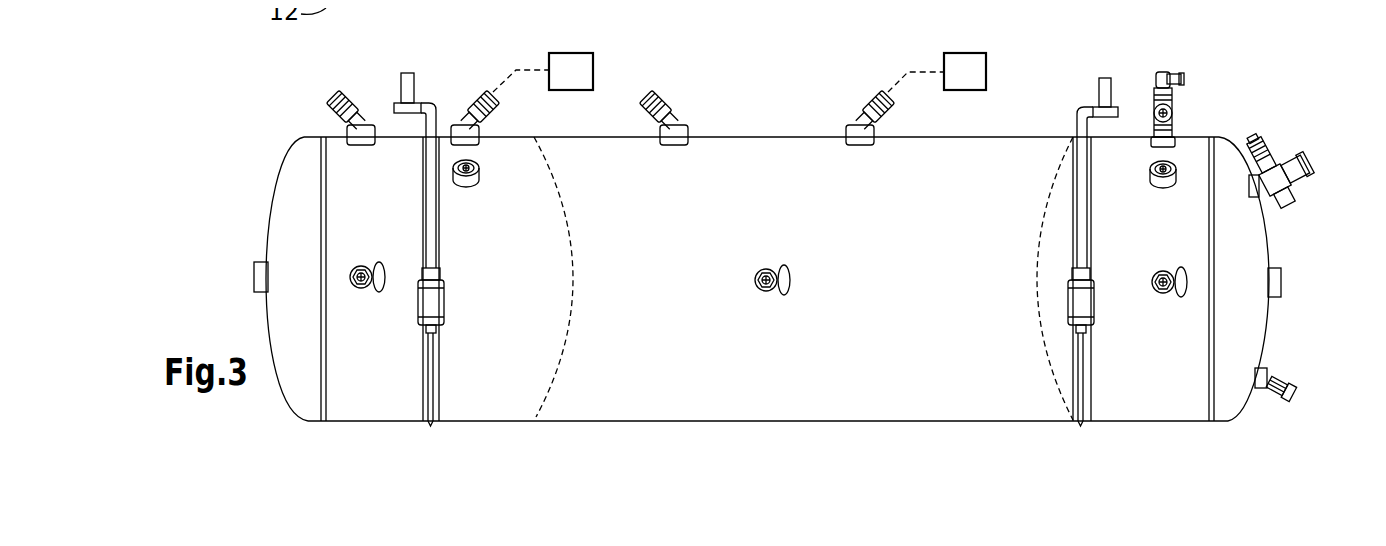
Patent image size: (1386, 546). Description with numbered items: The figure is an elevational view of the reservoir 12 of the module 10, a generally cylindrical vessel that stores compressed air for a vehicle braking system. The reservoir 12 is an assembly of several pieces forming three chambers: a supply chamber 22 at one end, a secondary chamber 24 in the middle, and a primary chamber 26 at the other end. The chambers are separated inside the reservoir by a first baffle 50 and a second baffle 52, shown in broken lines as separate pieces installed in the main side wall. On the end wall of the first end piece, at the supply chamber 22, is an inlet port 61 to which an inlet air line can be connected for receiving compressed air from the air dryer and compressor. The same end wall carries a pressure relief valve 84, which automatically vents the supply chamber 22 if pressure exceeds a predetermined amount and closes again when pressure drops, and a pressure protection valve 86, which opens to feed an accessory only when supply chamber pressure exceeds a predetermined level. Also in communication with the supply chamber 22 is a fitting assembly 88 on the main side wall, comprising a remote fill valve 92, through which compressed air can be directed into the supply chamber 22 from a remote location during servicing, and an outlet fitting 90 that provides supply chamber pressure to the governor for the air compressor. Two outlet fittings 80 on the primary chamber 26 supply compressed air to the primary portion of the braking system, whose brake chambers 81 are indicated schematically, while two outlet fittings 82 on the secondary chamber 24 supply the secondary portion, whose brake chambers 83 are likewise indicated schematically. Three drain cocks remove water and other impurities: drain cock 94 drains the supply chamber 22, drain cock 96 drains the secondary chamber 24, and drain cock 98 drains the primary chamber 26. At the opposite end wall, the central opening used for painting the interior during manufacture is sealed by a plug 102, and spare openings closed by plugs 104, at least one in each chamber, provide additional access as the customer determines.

The module 10 is at (256, 148).
The reservoir 12 is at (252, 188).
The supply chamber 22 is at (1133, 368).
The secondary chamber 24 is at (663, 335).
The primary chamber 26 is at (483, 318).
The first baffle 50 is at (1037, 298).
The second baffle 52 is at (572, 273).
The inlet port 61 is at (1282, 282).
The outlet fittings 80 is at (335, 98).
The brake chambers 81 is at (563, 62).
The outlet fittings 82 is at (683, 115).
The brake chambers 83 is at (960, 62).
The pressure relief valve 84 is at (1270, 378).
The pressure protection valve 86 is at (1288, 165).
The fitting assembly 88 is at (1174, 138).
The outlet fitting 90 is at (1170, 74).
The remote fill valve 92 is at (1172, 108).
The drain cock 94 is at (1161, 294).
The drain cock 96 is at (762, 292).
The drain cock 98 is at (360, 288).
The plug 102 is at (252, 282).
The plugs 104 is at (469, 184).